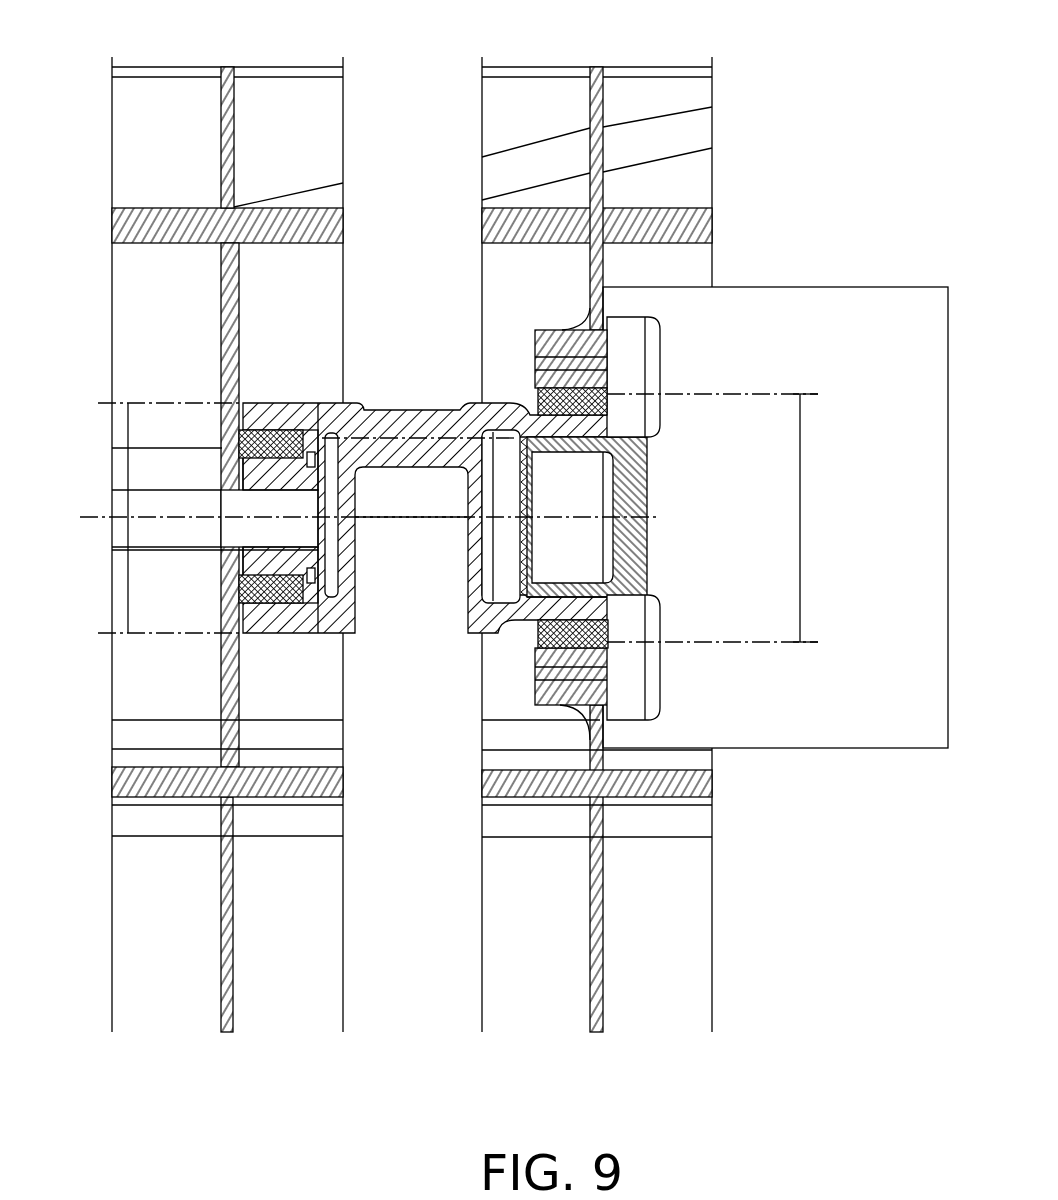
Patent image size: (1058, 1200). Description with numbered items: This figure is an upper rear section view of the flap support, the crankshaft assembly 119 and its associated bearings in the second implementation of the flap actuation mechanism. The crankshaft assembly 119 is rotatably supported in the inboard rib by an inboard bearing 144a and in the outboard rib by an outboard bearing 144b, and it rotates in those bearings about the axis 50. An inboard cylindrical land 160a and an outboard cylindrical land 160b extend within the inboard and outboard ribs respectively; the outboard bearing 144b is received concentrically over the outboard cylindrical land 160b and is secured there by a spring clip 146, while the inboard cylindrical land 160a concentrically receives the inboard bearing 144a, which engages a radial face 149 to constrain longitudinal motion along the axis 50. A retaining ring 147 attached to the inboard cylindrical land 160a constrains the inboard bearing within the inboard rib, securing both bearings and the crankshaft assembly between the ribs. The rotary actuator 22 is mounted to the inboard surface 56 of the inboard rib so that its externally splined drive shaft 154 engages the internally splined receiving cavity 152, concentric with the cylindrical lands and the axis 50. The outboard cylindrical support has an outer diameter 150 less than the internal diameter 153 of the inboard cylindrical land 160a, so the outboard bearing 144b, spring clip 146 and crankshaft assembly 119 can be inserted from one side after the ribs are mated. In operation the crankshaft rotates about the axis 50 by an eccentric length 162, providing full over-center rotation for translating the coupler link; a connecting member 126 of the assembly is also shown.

The crankshaft assembly 119 is at (398, 340).
The rotary actuator 22 is at (793, 287).
The hub 126 is at (438, 422).
The spring clip 146 is at (312, 452).
The inboard bearing 144a is at (570, 632).
The outboard bearing 144b is at (283, 433).
The inboard cylindrical land 160a is at (607, 342).
The outboard cylindrical land 160b is at (275, 470).
The retaining ring 147 is at (560, 377).
The radial face 149 is at (538, 412).
The outer diameter 150 is at (130, 468).
The axis 50 is at (640, 517).
The internal diameter 153 is at (800, 500).
The drive shaft 154 is at (575, 442).
The receiving cavity 152 is at (580, 597).
The eccentric length 162 is at (383, 491).
The inboard surface 56 is at (603, 711).